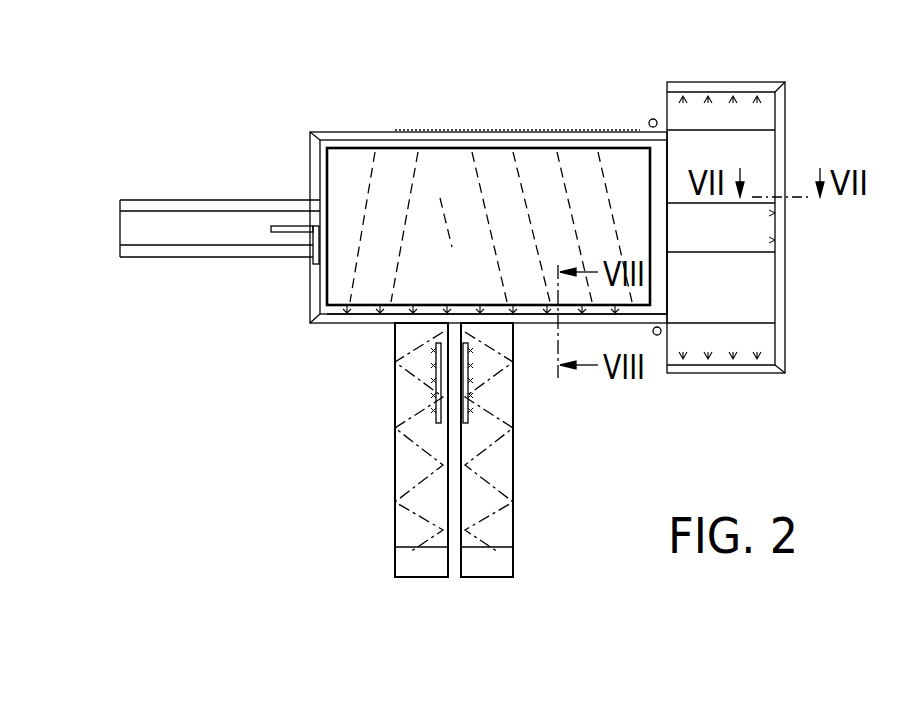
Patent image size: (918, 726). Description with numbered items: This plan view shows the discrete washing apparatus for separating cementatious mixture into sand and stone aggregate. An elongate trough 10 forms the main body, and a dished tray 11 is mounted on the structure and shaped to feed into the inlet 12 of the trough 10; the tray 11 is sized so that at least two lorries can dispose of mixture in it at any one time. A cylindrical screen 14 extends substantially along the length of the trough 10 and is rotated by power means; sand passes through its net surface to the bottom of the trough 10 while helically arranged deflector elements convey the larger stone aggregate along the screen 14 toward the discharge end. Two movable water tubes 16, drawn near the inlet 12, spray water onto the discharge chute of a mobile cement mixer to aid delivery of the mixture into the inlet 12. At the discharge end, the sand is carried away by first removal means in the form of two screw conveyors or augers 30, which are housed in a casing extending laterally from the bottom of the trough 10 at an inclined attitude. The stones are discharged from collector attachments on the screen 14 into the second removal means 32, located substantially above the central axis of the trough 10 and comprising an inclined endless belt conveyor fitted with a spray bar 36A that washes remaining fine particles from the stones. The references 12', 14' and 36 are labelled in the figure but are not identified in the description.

The elongate trough 10 is at (350, 126).
The dished tray 11 is at (752, 152).
The inlet 12 is at (762, 290).
The upper block 12' is at (759, 198).
The cylindrical screen 14 is at (491, 162).
The bottom wall 14' is at (476, 361).
The movable water tubes 16 is at (652, 119).
The screw conveyors or augers 30 is at (430, 505).
The second removal means 32 is at (233, 196).
The bars 36 is at (433, 388).
The spray bar 36A is at (297, 232).